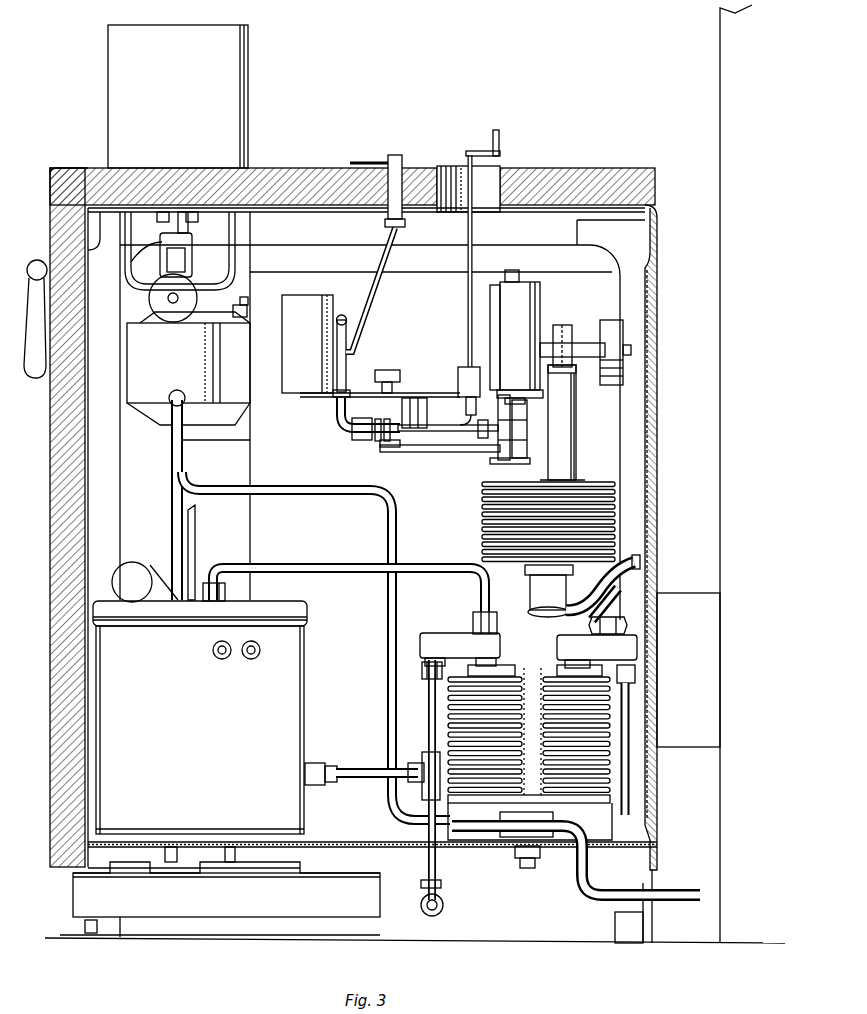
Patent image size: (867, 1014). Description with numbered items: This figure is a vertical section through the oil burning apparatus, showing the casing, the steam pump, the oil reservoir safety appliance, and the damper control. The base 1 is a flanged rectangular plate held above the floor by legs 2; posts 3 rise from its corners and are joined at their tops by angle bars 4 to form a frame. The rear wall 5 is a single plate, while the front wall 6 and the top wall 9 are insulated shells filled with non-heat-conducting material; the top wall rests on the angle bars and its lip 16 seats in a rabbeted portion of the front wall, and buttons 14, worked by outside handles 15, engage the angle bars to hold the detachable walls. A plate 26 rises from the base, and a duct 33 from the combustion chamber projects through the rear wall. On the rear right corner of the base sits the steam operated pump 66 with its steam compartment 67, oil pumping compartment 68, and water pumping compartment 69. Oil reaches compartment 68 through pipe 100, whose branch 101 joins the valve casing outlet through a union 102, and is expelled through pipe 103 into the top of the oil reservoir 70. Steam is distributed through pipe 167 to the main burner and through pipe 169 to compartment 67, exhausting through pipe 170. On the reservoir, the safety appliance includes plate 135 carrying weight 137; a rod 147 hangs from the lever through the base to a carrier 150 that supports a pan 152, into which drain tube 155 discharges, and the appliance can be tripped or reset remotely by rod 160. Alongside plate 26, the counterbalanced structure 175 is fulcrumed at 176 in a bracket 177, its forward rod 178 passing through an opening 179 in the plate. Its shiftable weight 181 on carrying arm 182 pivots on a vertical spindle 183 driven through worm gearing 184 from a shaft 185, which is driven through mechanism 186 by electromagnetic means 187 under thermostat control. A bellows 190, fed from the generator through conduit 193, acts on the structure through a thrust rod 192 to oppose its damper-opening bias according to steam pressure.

The base 1 is at (354, 842).
The legs 2 is at (80, 928).
The post 3 is at (612, 262).
The angle bars 4 is at (650, 222).
The rear wall 5 is at (651, 455).
The front wall 6 is at (62, 505).
The top wall 9 is at (318, 170).
The buttons 14 is at (88, 268).
The handles 15 is at (30, 325).
The lip 16 is at (84, 170).
The plate 26 is at (256, 460).
The duct 33 is at (690, 593).
The steam operated pump 66 is at (532, 662).
The steam compartment 67 is at (590, 775).
The oil pumping compartment 68 is at (447, 702).
The water pumping compartment 69 is at (600, 725).
The oil reservoir 70 is at (200, 717).
The pipe 100 is at (428, 738).
The branch 101 is at (374, 768).
The union 102 is at (318, 762).
The pipe 103 is at (428, 567).
The plate 135 is at (157, 598).
The weight 137 is at (132, 582).
The rod 147 is at (236, 857).
The carrier 150 is at (195, 875).
The pan 152 is at (220, 905).
The drain tube 155 is at (177, 857).
The rod 160 is at (197, 531).
The pipe 167 is at (171, 526).
The pipe 169 is at (332, 492).
The pipe 170 is at (618, 890).
The counterbalanced structure 175 is at (445, 383).
The fulcrum 176 is at (566, 338).
The bracket 177 is at (570, 406).
The rod 178 is at (334, 416).
The opening 179 is at (344, 316).
The shiftable weight 181 is at (371, 346).
The carrying arm 182 is at (374, 395).
The vertical spindle 183 is at (397, 418).
The worm gearing 184 is at (382, 442).
The shaft 185 is at (445, 432).
The mechanism 186 is at (500, 448).
The electromagnetic means 187 is at (500, 330).
The pressure operated device 190 is at (482, 510).
The thrust rod 192 is at (572, 437).
The conduit 193 is at (628, 618).